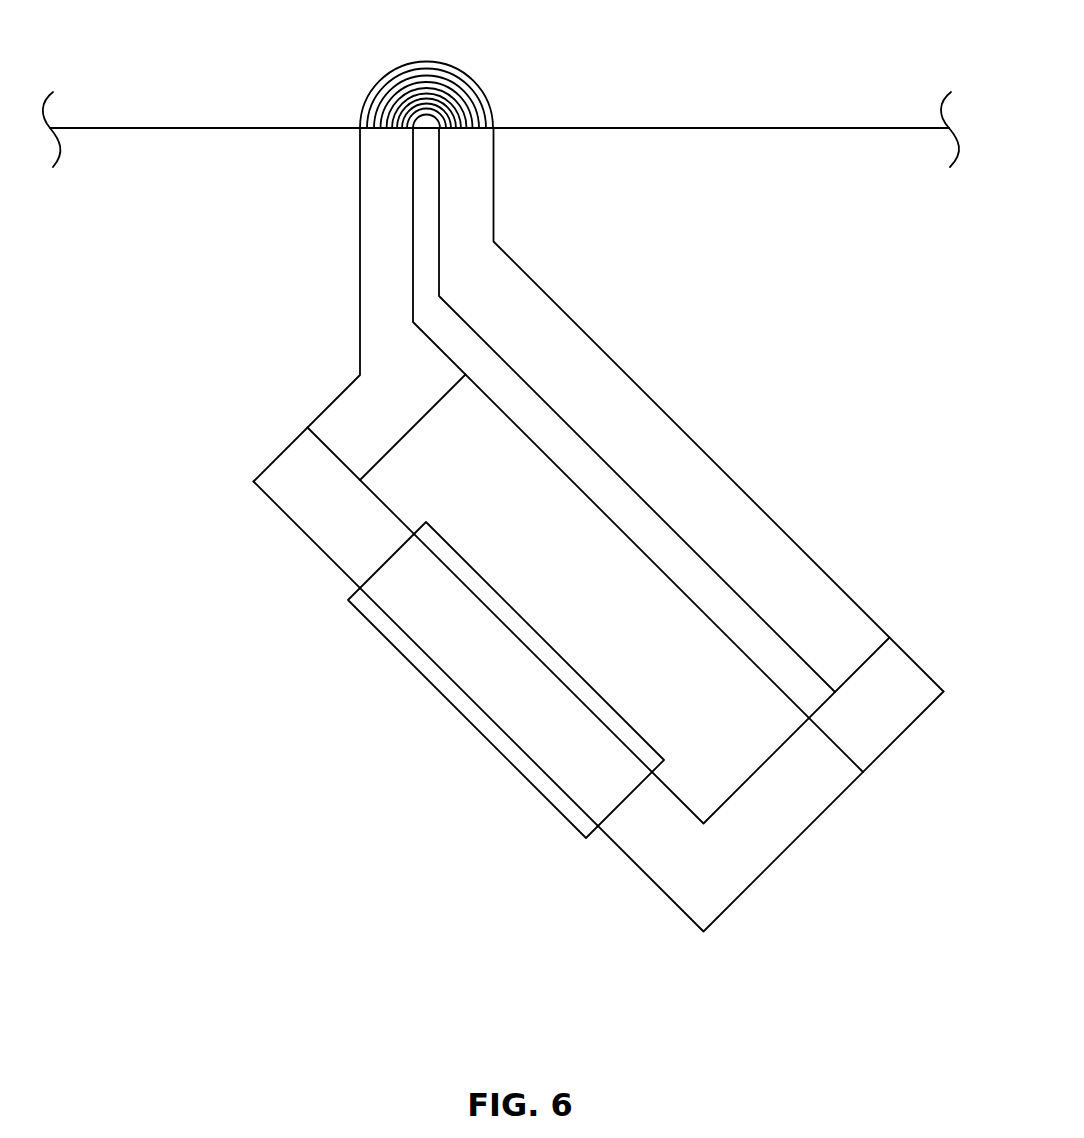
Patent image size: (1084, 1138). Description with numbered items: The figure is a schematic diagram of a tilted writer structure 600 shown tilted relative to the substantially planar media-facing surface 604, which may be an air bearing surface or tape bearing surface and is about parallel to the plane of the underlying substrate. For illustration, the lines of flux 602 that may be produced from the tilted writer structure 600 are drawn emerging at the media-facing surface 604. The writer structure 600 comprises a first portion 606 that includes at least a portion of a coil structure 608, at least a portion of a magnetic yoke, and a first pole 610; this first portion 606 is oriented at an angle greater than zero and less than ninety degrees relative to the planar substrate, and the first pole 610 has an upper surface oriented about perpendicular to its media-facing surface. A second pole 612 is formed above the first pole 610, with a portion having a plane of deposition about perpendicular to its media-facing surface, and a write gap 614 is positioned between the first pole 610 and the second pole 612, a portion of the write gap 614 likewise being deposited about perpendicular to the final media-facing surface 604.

The tilted writer structure 600 is at (238, 261).
The lines of flux 602 is at (451, 68).
The media-facing surface 604 is at (688, 127).
The first portion 606 is at (476, 731).
The coil structure 608 is at (427, 597).
The first pole 610 is at (388, 223).
The second pole 612 is at (463, 223).
The write gap 614 is at (430, 260).